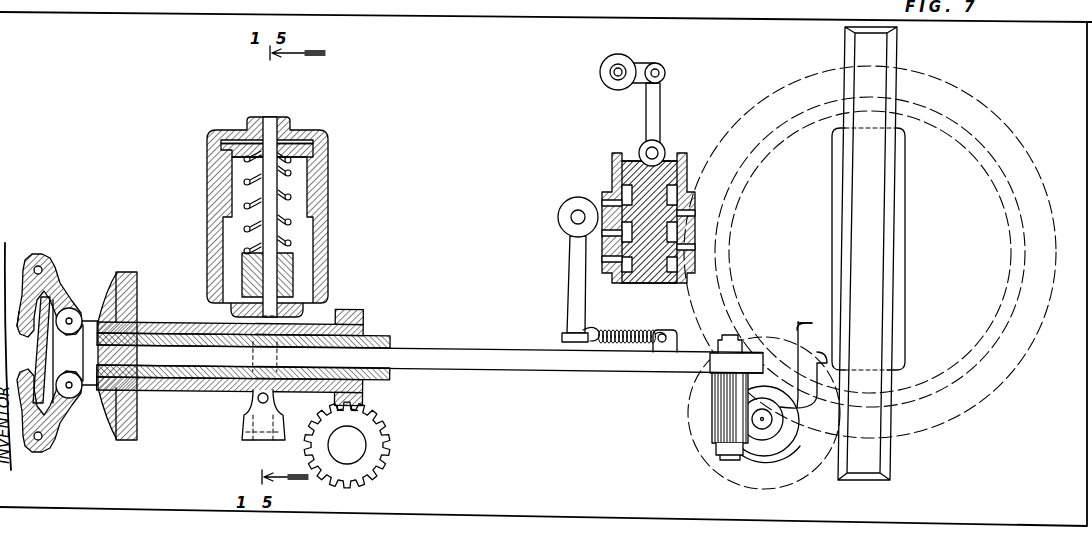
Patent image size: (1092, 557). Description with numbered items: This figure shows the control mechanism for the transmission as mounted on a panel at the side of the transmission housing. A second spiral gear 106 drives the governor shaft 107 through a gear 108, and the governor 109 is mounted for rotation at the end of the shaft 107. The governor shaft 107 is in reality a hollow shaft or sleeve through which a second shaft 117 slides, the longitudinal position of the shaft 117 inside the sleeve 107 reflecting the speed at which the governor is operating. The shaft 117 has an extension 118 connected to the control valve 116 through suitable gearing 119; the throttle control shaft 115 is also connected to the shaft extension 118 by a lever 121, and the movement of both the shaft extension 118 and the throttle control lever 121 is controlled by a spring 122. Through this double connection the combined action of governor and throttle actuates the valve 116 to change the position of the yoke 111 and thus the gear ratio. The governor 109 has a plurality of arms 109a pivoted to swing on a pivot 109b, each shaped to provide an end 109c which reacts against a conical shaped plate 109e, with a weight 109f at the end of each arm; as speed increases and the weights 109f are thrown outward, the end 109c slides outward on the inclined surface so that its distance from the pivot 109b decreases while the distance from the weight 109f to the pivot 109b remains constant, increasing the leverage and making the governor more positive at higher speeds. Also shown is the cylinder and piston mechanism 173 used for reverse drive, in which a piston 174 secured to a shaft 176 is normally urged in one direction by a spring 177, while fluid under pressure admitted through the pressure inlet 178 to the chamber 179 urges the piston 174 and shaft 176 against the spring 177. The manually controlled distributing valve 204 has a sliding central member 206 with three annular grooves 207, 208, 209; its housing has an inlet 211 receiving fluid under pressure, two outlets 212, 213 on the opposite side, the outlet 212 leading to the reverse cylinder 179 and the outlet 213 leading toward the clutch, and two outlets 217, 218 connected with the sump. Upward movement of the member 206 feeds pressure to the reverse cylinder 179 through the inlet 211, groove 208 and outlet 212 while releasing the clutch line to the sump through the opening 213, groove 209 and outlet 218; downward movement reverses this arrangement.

The second spiral gear 106 is at (383, 437).
The governor shaft 107 is at (208, 376).
The gear 108 is at (363, 317).
The governor 109 is at (62, 335).
The arm 109a is at (68, 290).
The pivot 109b is at (50, 253).
The end 109c is at (20, 281).
The conical shaped plate 109e is at (22, 350).
The weight 109f is at (72, 313).
The yoke 111 is at (880, 160).
The throttle control shaft 115 is at (571, 217).
The control valve 116 is at (790, 448).
The second shaft 117 is at (128, 350).
The shaft extension 118 is at (533, 368).
The gearing 119 is at (712, 388).
The lever 121 is at (572, 307).
The spring 122 is at (604, 331).
The cylinder and piston mechanism 173 is at (272, 195).
The piston 174 is at (307, 142).
The shaft 176 is at (262, 213).
The spring 177 is at (246, 181).
The pressure inlet 178 is at (268, 117).
The chamber 179 is at (238, 141).
The manually controlled distributing valve 204 is at (649, 172).
The sliding central member 206 is at (642, 168).
The annular groove 207 is at (678, 195).
The annular groove 208 is at (679, 233).
The annular groove 209 is at (680, 263).
The inlet 211 is at (607, 233).
The outlet 212 is at (694, 213).
The outlet 213 is at (694, 247).
The outlet 217 is at (612, 203).
The outlet 218 is at (608, 259).